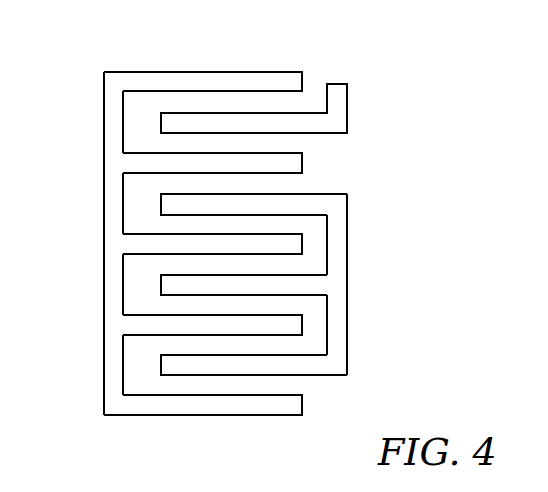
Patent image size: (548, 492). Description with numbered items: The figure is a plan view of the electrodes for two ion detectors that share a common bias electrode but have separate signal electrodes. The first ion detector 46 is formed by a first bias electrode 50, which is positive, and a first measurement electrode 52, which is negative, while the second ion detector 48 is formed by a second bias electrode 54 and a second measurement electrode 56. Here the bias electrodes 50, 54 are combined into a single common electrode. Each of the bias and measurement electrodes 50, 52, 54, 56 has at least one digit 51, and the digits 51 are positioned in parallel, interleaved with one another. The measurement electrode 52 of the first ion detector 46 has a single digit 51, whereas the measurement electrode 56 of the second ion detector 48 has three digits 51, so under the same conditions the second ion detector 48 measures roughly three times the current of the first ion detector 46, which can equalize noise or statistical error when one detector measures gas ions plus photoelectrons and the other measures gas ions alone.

The first ion detector 46 is at (251, 248).
The second ion detector 48 is at (311, 284).
The first bias electrode 50 is at (165, 243).
The digit 51 is at (255, 205).
The first measurement electrode 52 is at (347, 123).
The second bias electrode 54 is at (115, 162).
The second measurement electrode 56 is at (347, 232).